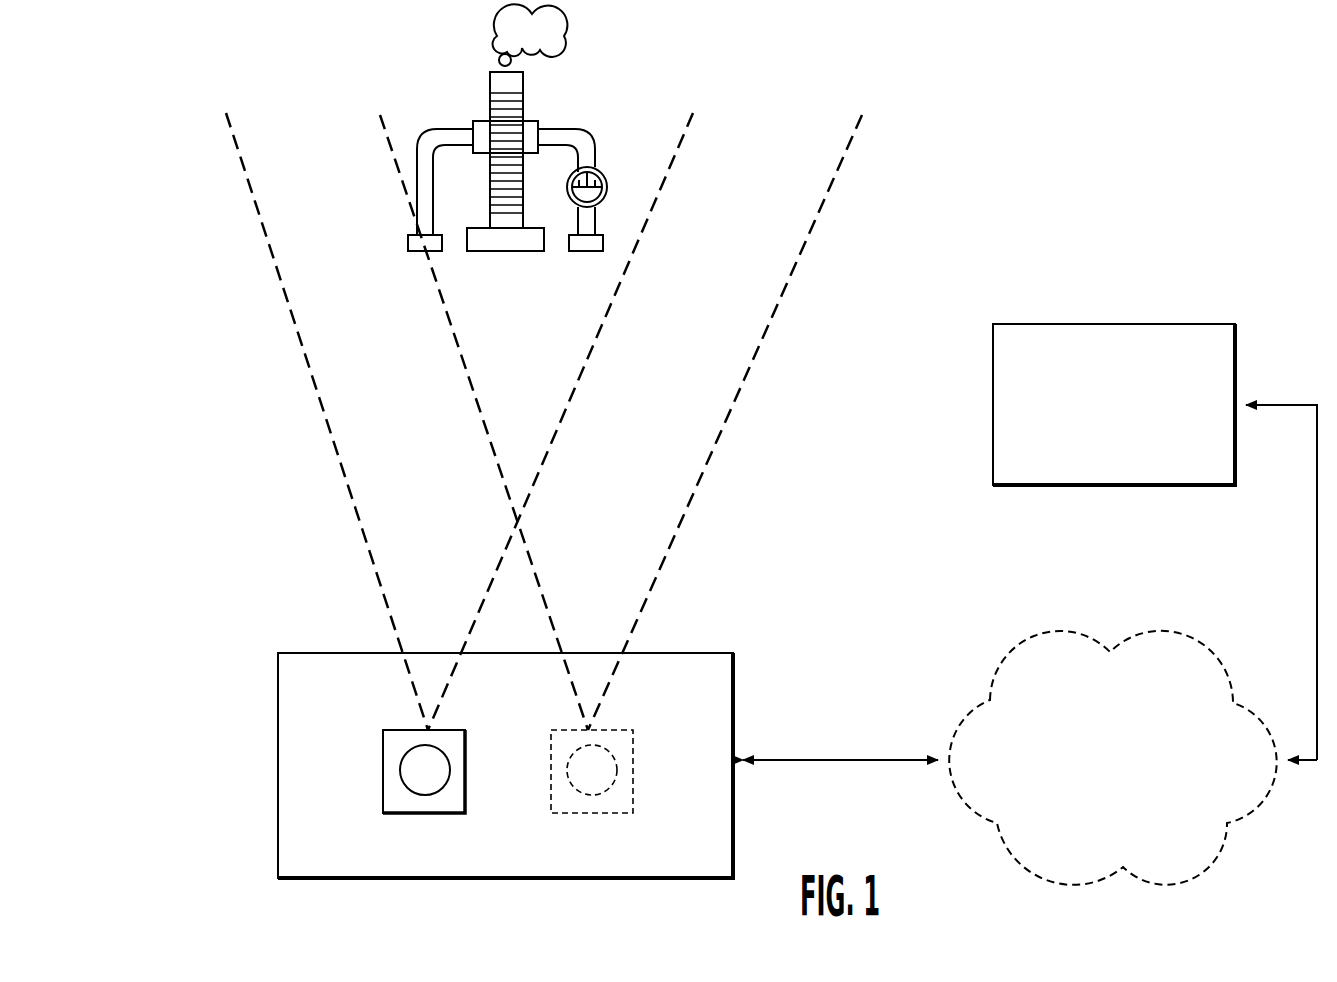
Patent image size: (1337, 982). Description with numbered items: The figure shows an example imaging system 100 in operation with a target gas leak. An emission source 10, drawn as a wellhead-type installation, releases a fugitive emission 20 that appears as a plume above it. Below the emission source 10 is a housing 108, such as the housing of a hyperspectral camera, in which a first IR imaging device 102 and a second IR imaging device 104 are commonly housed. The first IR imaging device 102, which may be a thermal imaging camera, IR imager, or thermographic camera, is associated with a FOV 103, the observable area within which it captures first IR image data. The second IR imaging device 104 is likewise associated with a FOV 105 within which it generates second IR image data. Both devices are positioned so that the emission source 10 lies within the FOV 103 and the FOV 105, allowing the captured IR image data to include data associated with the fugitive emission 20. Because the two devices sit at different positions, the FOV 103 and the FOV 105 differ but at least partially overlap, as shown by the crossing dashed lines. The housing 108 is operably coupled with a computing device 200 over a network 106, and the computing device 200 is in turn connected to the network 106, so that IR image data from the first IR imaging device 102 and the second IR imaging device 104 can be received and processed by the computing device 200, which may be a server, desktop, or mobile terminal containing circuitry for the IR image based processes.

The emission source 10 is at (511, 60).
The fugitive emission 20 is at (563, 39).
The imaging system 100 is at (268, 608).
The first IR imaging device 102 is at (417, 814).
The FOV 103 is at (358, 514).
The second IR imaging device 104 is at (587, 814).
The FOV 105 is at (727, 420).
The network 106 is at (1163, 637).
The housing 108 is at (605, 651).
The computing device 200 is at (1180, 324).